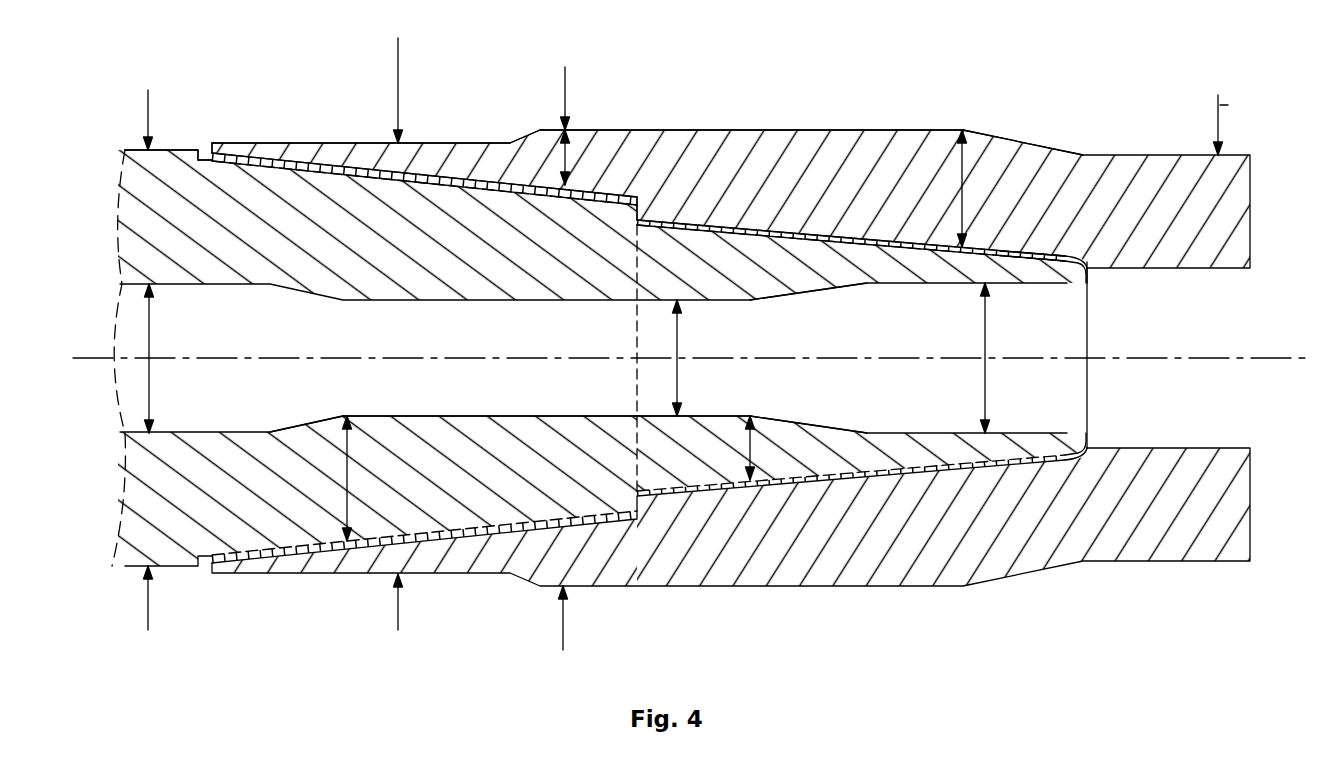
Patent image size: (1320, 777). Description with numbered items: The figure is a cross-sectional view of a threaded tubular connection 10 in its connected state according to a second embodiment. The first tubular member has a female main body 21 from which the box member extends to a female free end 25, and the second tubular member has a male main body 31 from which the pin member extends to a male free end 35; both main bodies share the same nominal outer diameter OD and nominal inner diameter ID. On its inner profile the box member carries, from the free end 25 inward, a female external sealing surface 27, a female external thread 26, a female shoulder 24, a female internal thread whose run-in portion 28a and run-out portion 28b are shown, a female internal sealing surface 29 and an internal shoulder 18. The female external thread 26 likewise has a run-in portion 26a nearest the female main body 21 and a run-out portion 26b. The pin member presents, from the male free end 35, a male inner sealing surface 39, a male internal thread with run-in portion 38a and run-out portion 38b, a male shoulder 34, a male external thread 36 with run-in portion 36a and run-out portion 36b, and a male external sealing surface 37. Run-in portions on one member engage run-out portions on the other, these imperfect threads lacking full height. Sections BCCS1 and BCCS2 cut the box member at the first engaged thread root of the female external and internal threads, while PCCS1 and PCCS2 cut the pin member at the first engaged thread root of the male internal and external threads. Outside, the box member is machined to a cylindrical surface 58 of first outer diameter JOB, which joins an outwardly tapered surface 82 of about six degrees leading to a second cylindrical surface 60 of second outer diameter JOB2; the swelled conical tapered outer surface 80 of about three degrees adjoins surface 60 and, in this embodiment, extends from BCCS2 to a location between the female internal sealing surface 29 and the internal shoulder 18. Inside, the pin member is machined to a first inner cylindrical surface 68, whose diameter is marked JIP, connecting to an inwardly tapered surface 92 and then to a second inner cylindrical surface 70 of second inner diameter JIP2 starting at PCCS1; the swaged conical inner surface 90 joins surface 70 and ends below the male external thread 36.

The threaded tubular connection 10 is at (1080, 33).
The internal shoulder 18 is at (1082, 268).
The female main body 21 is at (1224, 211).
The female shoulder 24 is at (640, 212).
The female free end 25 is at (205, 148).
The female external thread 26 is at (337, 160).
The run-in portion of female external thread 26a is at (582, 187).
The run-out portion of female external thread 26b is at (292, 167).
The female external sealing surface 27 is at (240, 152).
The run-in portion of female internal thread 28a is at (978, 240).
The run-out portion of female internal thread 28b is at (707, 218).
The female internal sealing surface 29 is at (1050, 248).
The male main body 31 is at (135, 482).
The male shoulder 34 is at (633, 223).
The male free end 35 is at (1070, 265).
The male external thread 36 is at (331, 176).
The run-in portion of male external thread 36a is at (292, 174).
The run-out portion of male external thread 36b is at (586, 202).
The male external sealing surface 37 is at (222, 165).
The run-in portion of male internal thread 38a is at (744, 233).
The run-out portion of male internal thread 38b is at (966, 250).
The male inner sealing surface 39 is at (1030, 258).
The cylindrical surface 58 is at (436, 138).
The second cylindrical surface 60 is at (803, 130).
The first machined inner cylindrical surface 68 is at (903, 287).
The second inner cylindrical surface 70 is at (438, 416).
The conical tapered outer surface 80 is at (990, 134).
The outwardly tapered surface 82 is at (540, 137).
The conical tapered inner surface 90 is at (290, 427).
The inwardly tapered surface 92 is at (797, 424).
The nominal outer diameter OD is at (147, 90).
The nominal inner diameter ID is at (148, 338).
The first outer diameter JOB is at (397, 320).
The second outer diameter JOB2 is at (567, 78).
The box critical cross section at female external thread BCCS1 is at (563, 160).
The box critical cross section at female internal thread BCCS2 is at (962, 180).
The joint inner pitch JIP is at (988, 350).
The second inner diameter JIP2 is at (680, 345).
The pin critical cross section at male internal thread PCCS1 is at (752, 470).
The pin critical cross section at male external thread PCCS2 is at (345, 500).